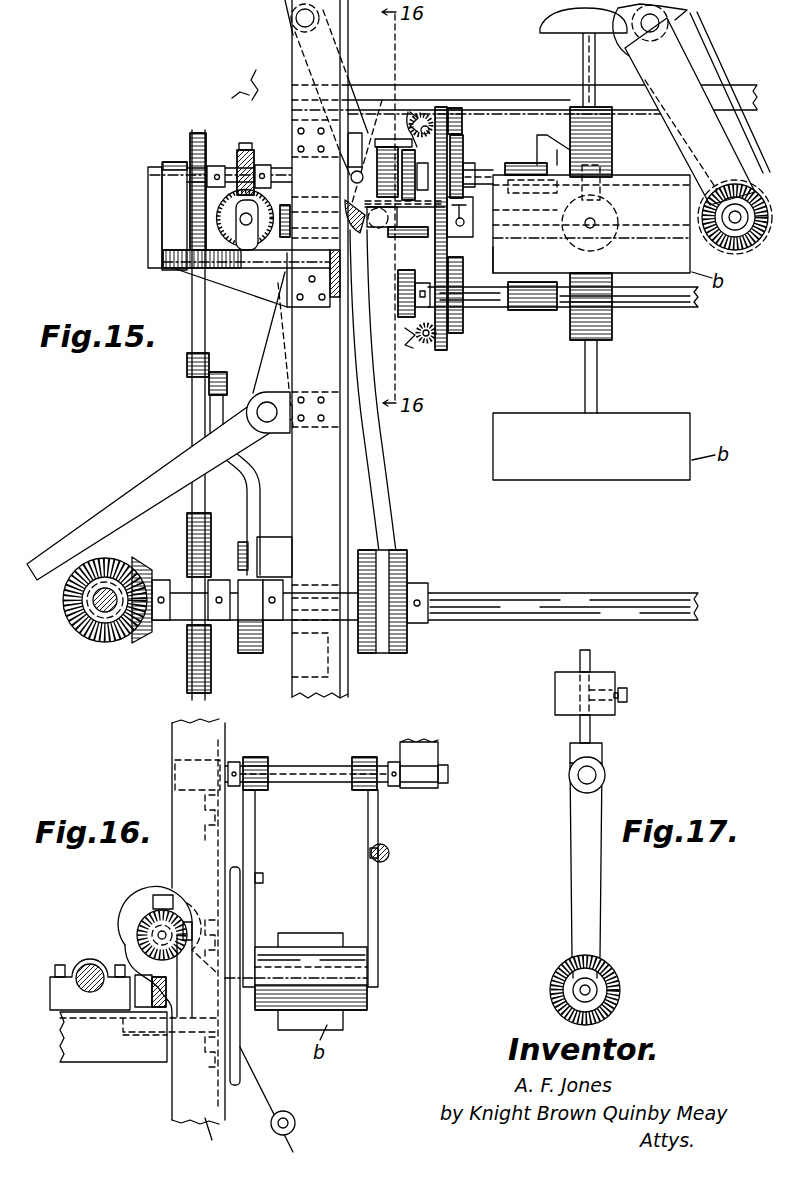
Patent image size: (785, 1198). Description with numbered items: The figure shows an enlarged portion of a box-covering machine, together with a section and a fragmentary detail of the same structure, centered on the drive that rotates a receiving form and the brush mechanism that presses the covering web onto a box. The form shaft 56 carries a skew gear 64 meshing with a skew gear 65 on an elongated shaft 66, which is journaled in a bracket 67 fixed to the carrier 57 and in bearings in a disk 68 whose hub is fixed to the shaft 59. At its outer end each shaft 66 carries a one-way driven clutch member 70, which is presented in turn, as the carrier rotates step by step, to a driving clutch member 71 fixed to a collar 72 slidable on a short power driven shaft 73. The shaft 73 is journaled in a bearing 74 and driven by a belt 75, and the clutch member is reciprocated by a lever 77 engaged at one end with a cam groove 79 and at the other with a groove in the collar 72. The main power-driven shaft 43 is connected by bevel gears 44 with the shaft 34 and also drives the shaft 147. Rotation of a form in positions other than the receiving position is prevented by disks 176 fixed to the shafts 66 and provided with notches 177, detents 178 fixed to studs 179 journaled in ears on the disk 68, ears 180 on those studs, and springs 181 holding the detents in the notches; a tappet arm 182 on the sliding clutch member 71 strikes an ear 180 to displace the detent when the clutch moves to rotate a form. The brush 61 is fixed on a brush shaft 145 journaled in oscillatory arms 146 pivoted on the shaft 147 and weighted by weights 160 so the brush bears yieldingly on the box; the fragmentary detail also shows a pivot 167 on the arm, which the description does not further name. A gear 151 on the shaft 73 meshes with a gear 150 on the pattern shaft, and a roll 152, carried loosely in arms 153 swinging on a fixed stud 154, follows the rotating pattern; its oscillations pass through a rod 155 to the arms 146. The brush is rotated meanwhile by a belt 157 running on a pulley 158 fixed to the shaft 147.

In FIG. 15, the shaft 34 is at (88, 610).
In FIG. 15, the power-driven shaft 43 is at (626, 596).
In FIG. 15, the bevel gears 44 is at (143, 622).
In FIG. 15, the form shaft 56 is at (596, 68).
In FIG. 15, the carrier 57 is at (612, 147).
In FIG. 15, the shaft 59 is at (493, 247).
In FIG. 16, the shaft 59 is at (82, 987).
In FIG. 15, the brush 61 is at (746, 251).
In FIG. 17, the brush 61 is at (614, 985).
In FIG. 15, the skew gear 64 is at (618, 227).
In FIG. 15, the skew gear 65 is at (613, 165).
In FIG. 15, the shaft 66 is at (492, 170).
In FIG. 15, the bracket 67 is at (537, 160).
In FIG. 15, the disk 68 is at (440, 118).
In FIG. 15, the one-way driven clutch member 70 is at (463, 150).
In FIG. 15, the driving clutch member 71 is at (361, 156).
In FIG. 16, the driving clutch member 71 is at (145, 918).
In FIG. 15, the collar 72 is at (348, 157).
In FIG. 15, the power driven shaft 73 is at (275, 165).
In FIG. 16, the power driven shaft 73 is at (150, 933).
In FIG. 15, the bearing 74 is at (172, 226).
In FIG. 15, the belt 75 is at (192, 296).
In FIG. 16, the belt 75 is at (253, 1087).
In FIG. 15, the lever 77 is at (382, 480).
In FIG. 15, the cam groove 79 is at (391, 655).
In FIG. 15, the brush shaft 145 is at (722, 230).
In FIG. 17, the brush shaft 145 is at (593, 990).
In FIG. 15, the oscillatory arm 146 is at (713, 133).
In FIG. 17, the oscillatory arm 146 is at (593, 901).
In FIG. 15, the shaft 147 is at (660, 24).
In FIG. 15, the gear 150 is at (255, 268).
In FIG. 16, the gear 150 is at (165, 1017).
In FIG. 15, the gear 151 is at (240, 158).
In FIG. 16, the gear 151 is at (145, 900).
In FIG. 16, the roll 152 is at (357, 1007).
In FIG. 16, the oscillatory arms 153 is at (256, 912).
In FIG. 16, the fixed stud 154 is at (318, 766).
In FIG. 15, the rod 155 is at (533, 93).
In FIG. 16, the rod 155 is at (388, 845).
In FIG. 15, the belt 157 is at (717, 75).
In FIG. 15, the pulley 158 is at (683, 35).
In FIG. 17, the weight 160 is at (608, 680).
In FIG. 17, the pivot 167 is at (590, 777).
In FIG. 15, the disk 176 is at (490, 196).
In FIG. 15, the notch 177 is at (495, 187).
In FIG. 15, the detent 178 is at (448, 127).
In FIG. 15, the stud 179 is at (462, 115).
In FIG. 15, the ear 180 is at (410, 112).
In FIG. 15, the spring 181 is at (421, 110).
In FIG. 15, the tappet arm 182 is at (393, 139).
In FIG. 16, the tappet arm 182 is at (172, 895).